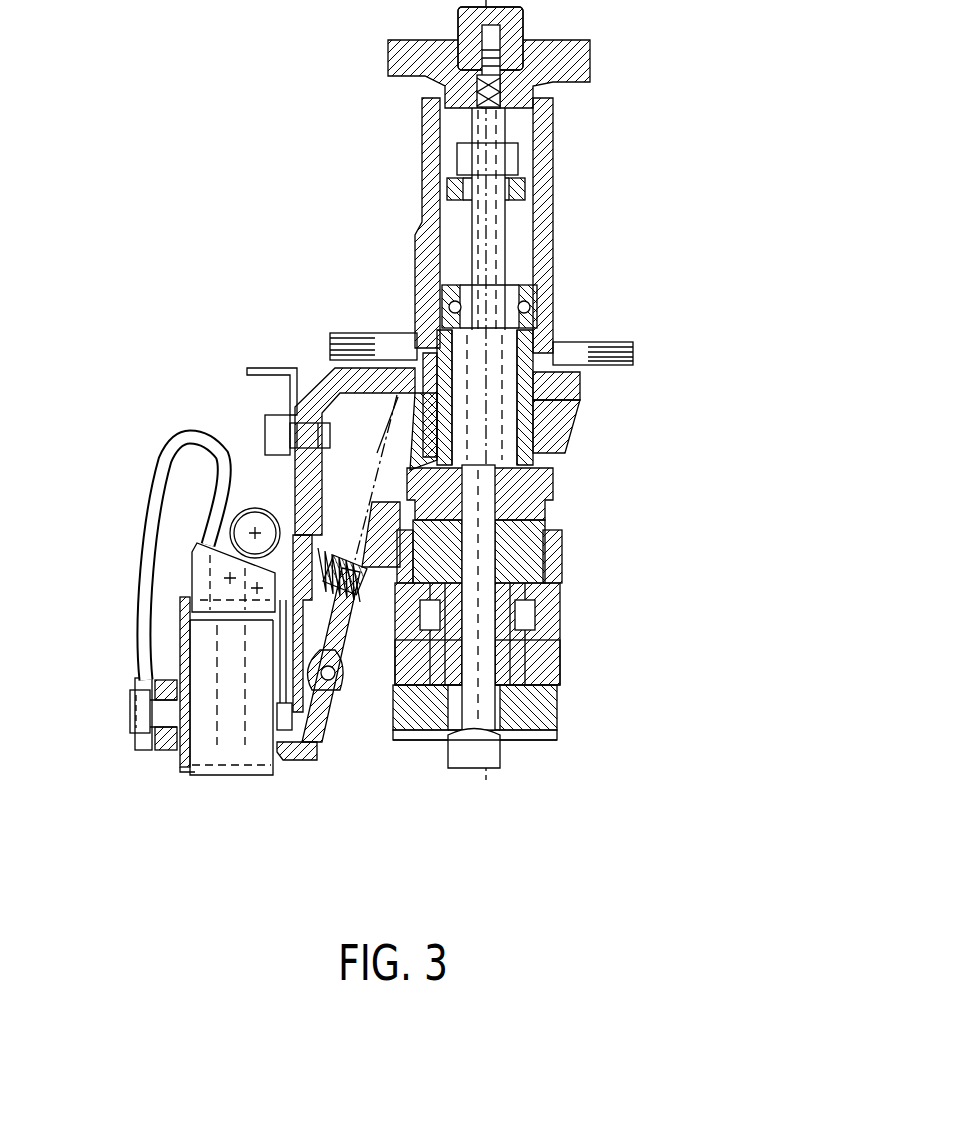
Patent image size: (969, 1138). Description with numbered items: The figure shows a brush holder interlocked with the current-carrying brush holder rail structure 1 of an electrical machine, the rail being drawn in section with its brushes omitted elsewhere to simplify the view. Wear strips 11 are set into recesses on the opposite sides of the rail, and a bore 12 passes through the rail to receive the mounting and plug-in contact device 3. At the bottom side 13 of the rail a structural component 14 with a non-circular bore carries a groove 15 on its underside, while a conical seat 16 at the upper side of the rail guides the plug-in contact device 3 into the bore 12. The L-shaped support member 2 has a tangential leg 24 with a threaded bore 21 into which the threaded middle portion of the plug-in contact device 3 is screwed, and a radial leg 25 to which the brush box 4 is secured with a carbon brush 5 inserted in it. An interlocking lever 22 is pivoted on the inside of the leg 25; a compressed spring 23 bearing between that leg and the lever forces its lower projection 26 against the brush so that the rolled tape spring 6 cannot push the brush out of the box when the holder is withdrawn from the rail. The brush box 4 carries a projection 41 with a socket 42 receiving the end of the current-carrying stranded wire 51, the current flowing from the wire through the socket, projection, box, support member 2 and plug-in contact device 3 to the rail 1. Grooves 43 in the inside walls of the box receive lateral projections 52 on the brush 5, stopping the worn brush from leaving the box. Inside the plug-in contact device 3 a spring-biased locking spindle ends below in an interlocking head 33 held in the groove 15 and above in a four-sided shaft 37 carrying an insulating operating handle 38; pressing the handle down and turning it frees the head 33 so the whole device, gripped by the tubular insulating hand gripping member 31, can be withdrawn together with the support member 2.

The brush holder rail structure 1 is at (535, 658).
The support member 2 is at (550, 430).
The mounting and plug-in contact device 3 is at (520, 413).
The brush box 4 is at (190, 637).
The carbon brush 5 is at (205, 750).
The rolled tape spring 6 is at (240, 507).
The wear strips 11 is at (548, 573).
The bore 12 is at (485, 542).
The bottom side 13 is at (543, 690).
The structural component 14 is at (543, 727).
The groove 15 is at (422, 732).
The conical seat 16 is at (530, 487).
The threaded bore 21 is at (575, 348).
The interlocking lever 22 is at (320, 760).
The compressed spring 23 is at (320, 560).
The leg 24 is at (565, 383).
The leg 25 is at (290, 475).
The projection 26 is at (285, 760).
The hand gripping member 31 is at (423, 268).
The interlocking head 33 is at (473, 752).
The four-sided shaft 37 is at (515, 96).
The operating handle 38 is at (582, 63).
The projection 41 is at (135, 748).
The socket 42 is at (132, 702).
The grooves 43 is at (233, 733).
The current-carrying stranded wire 51 is at (163, 448).
The lateral projections 52 is at (227, 610).